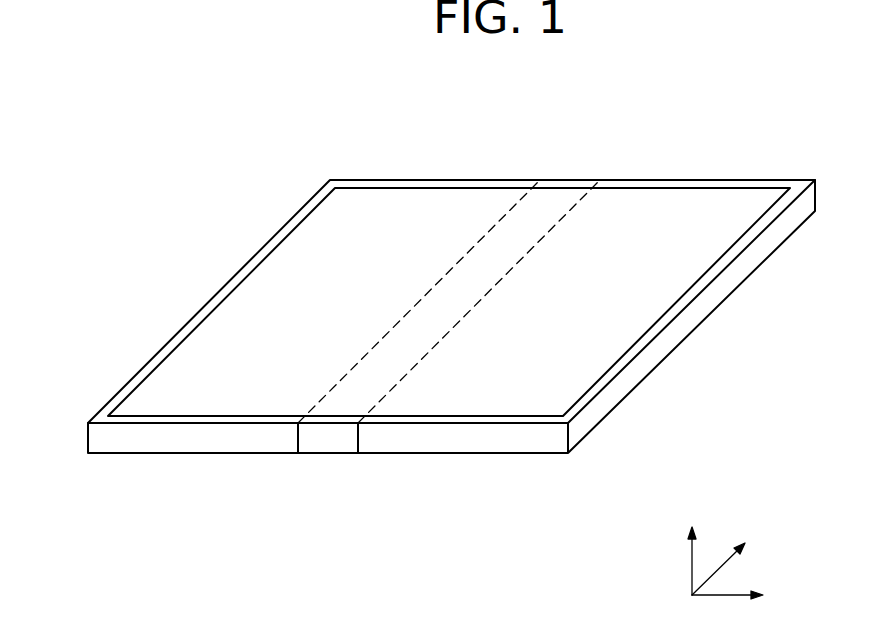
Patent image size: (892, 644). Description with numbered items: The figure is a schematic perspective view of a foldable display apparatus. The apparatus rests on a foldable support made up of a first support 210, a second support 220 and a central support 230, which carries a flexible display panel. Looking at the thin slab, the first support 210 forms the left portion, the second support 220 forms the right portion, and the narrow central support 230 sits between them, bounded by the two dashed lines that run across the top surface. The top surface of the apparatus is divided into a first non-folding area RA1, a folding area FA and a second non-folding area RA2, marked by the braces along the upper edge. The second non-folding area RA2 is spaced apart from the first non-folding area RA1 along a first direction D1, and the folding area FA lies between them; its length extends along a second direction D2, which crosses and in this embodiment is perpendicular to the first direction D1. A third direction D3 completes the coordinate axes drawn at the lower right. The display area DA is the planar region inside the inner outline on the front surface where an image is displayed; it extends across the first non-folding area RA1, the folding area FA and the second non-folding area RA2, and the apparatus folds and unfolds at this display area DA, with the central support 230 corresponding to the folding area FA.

The first support 210 is at (190, 447).
The second support 220 is at (467, 447).
The central support 230 is at (342, 448).
The display area DA is at (258, 300).
The first non-folding area RA1 is at (540, 177).
The folding area FA is at (598, 177).
The second non-folding area RA2 is at (812, 177).
The first direction D1 is at (743, 596).
The second direction D2 is at (732, 558).
The third direction D3 is at (692, 545).